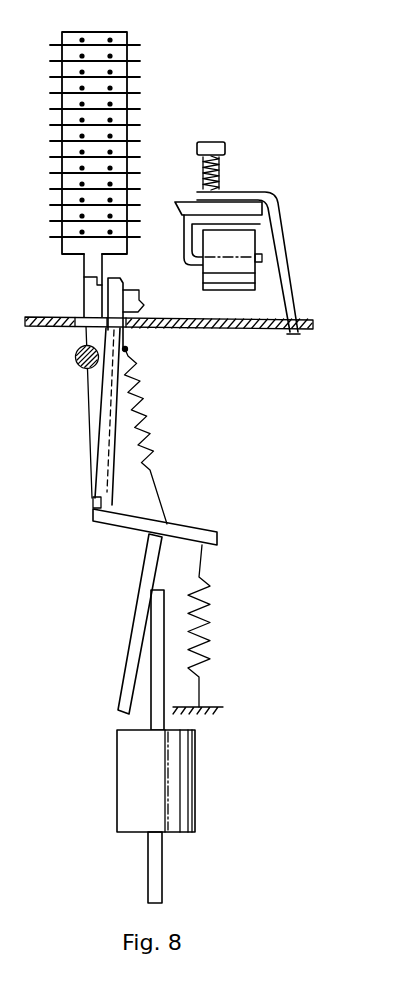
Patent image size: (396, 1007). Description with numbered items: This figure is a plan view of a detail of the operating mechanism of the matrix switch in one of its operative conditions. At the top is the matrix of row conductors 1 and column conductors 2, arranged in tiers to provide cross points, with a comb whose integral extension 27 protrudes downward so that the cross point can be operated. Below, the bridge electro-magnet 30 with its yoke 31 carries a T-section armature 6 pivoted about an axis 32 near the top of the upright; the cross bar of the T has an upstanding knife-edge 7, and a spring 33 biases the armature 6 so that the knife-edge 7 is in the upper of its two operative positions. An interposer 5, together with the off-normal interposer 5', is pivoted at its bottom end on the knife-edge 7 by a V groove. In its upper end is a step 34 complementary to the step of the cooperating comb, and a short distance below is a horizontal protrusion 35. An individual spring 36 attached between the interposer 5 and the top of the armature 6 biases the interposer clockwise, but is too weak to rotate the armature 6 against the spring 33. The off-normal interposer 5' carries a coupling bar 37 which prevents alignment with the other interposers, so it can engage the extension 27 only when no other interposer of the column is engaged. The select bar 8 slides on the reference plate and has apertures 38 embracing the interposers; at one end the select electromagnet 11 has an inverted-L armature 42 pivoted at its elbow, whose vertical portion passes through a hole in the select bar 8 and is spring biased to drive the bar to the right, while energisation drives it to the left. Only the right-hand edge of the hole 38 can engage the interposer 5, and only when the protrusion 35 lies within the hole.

The row conductors 1 is at (137, 110).
The column conductors 2 is at (110, 37).
The interposer 5 is at (88, 416).
The off-normal interposer 5' is at (83, 411).
The armature 6 is at (187, 533).
The knife-edge 7 is at (92, 505).
The select bar 8 is at (237, 328).
The select electromagnet 11 is at (284, 216).
The extension 27 is at (84, 273).
The electro-magnet 30 is at (187, 783).
The yoke 31 is at (155, 873).
The axis 32 is at (152, 588).
The spring 33 is at (208, 636).
The step 34 is at (118, 280).
The horizontal protrusion 35 is at (142, 305).
The spring 36 is at (148, 421).
The coupling bar 37 is at (76, 355).
The aperture 38 is at (80, 313).
The armature 42 is at (282, 262).